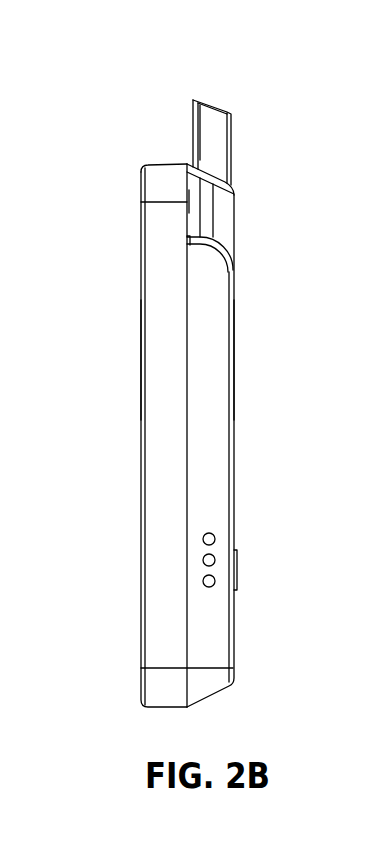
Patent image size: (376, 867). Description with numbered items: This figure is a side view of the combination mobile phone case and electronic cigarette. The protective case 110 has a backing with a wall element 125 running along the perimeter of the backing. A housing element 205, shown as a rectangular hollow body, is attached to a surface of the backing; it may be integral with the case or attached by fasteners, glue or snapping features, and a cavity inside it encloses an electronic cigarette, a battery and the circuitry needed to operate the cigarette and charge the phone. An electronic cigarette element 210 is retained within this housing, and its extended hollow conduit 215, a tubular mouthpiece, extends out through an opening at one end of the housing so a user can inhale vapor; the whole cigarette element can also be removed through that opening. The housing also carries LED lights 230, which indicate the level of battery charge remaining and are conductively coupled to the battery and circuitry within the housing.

The case 110 is at (127, 138).
The wall element 125 is at (150, 257).
The housing element 205 is at (251, 348).
The electronic cigarette element 210 is at (244, 108).
The extended hollow conduit 215 is at (207, 118).
The LED lights 230 is at (215, 539).